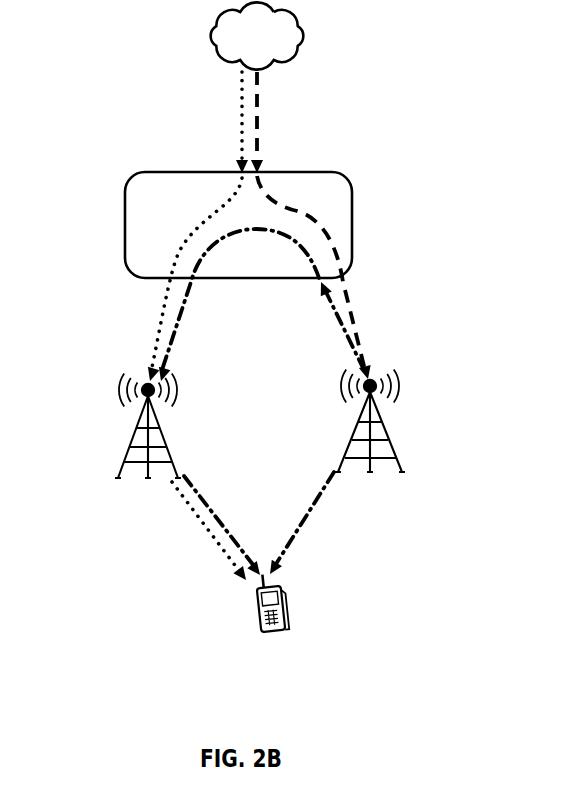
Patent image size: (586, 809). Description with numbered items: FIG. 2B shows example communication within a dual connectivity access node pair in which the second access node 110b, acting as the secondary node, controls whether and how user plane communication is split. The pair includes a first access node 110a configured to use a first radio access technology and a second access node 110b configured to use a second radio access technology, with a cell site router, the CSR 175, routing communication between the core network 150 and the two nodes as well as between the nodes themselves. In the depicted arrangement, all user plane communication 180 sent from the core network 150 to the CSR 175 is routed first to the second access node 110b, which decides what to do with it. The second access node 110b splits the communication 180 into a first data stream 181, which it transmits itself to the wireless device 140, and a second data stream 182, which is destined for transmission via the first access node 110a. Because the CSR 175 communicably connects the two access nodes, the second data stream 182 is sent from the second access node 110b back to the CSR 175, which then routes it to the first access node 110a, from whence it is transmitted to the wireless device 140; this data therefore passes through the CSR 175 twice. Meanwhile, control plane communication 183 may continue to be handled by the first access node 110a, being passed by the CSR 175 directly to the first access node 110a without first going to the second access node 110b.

The core network 150 is at (273, 50).
The cell site router 175 is at (165, 254).
The control plane communication 183 is at (240, 97).
The user plane communication 180 is at (258, 140).
The second data stream 182 is at (338, 316).
The first data stream 181 is at (308, 512).
The first access node 110a is at (121, 462).
The second access node 110b is at (396, 459).
The wireless device 140 is at (259, 604).